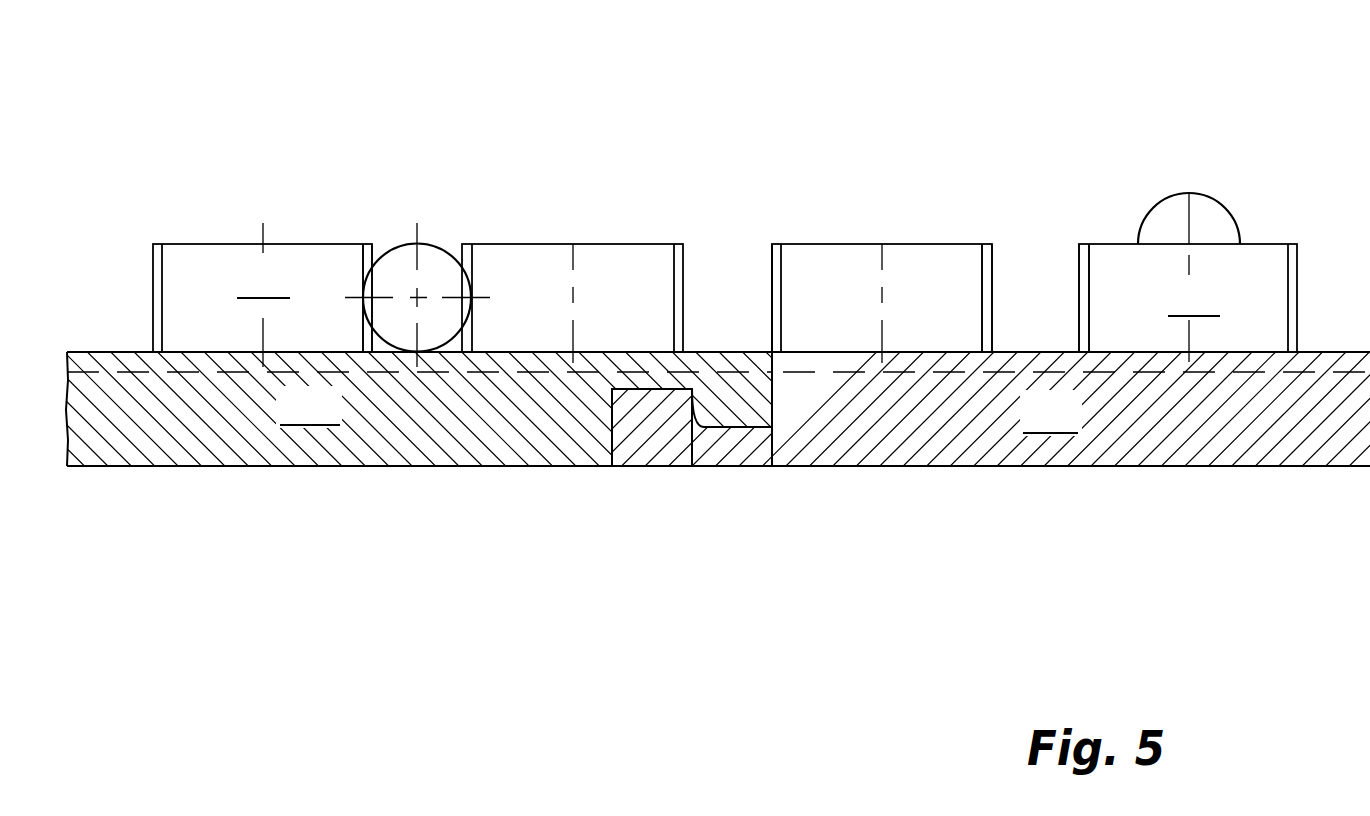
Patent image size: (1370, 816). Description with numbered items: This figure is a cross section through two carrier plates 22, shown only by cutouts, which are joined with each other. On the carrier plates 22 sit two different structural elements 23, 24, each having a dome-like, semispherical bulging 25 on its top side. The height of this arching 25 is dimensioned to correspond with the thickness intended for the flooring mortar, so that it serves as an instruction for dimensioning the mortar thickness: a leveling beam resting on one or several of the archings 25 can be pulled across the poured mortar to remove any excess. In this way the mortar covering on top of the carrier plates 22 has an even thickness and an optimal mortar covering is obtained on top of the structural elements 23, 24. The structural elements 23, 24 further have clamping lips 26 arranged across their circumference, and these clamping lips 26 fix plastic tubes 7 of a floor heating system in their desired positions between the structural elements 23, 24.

The plastic tubes 7 is at (436, 243).
The carrier plates 22 is at (685, 355).
The structural element 23 is at (262, 295).
The structural element 24 is at (1188, 303).
The semispherical bulging 25 is at (1203, 210).
The clamping lips 26 is at (366, 243).